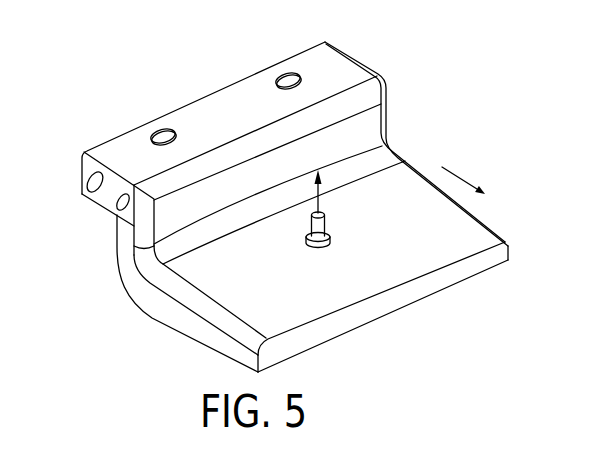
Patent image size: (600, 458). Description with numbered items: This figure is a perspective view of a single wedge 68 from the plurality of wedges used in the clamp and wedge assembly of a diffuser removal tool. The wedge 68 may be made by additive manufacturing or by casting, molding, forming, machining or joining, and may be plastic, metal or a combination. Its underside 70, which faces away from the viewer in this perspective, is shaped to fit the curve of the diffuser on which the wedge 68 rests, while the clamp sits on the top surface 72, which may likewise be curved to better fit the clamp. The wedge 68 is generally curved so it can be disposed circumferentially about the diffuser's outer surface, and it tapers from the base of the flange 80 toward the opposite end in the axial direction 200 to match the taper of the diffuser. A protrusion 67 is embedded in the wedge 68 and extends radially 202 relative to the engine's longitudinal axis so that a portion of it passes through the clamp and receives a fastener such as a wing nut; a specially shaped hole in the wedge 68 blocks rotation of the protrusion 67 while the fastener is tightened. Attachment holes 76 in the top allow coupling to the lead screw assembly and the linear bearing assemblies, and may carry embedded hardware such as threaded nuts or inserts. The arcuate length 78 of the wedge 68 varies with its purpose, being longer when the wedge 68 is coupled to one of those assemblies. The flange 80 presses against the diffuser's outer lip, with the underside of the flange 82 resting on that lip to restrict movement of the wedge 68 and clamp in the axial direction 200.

The protrusion 67 is at (327, 228).
The wedge 68 is at (455, 79).
The underside 70 is at (210, 347).
The top surface 72 is at (454, 221).
The attachment holes 76 is at (283, 79).
The arcuate length 78 is at (441, 288).
The flange 80 is at (384, 77).
The underside of the flange 82 is at (97, 206).
The axial direction 200 is at (464, 181).
The radial direction 202 is at (320, 197).